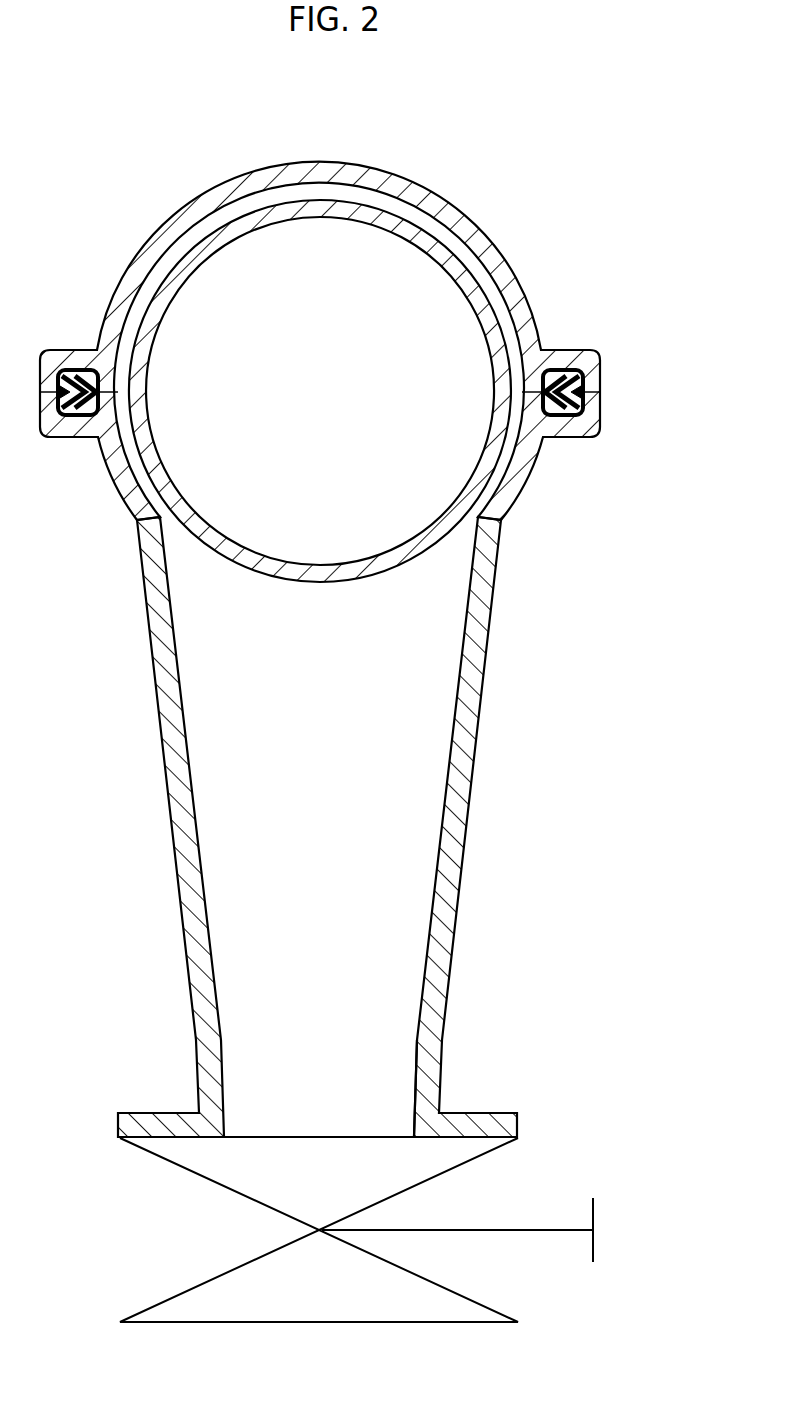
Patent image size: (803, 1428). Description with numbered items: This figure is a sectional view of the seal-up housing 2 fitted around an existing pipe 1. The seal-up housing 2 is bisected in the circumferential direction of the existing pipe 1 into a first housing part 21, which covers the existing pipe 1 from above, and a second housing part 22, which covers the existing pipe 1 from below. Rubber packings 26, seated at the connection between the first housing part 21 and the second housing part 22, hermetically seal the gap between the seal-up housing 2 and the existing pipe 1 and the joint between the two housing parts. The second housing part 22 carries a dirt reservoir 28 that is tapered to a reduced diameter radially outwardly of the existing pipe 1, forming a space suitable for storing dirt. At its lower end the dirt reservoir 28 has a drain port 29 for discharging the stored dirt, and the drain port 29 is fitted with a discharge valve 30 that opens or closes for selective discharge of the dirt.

The existing pipe 1 is at (330, 582).
The seal-up housing 2 is at (334, 649).
The first housing part 21 is at (458, 207).
The second housing part 22 is at (520, 502).
The rubber packing 26 is at (582, 368).
The dirt reservoir 28 is at (363, 740).
The drain port 29 is at (418, 1083).
The discharge valve 30 is at (470, 1162).